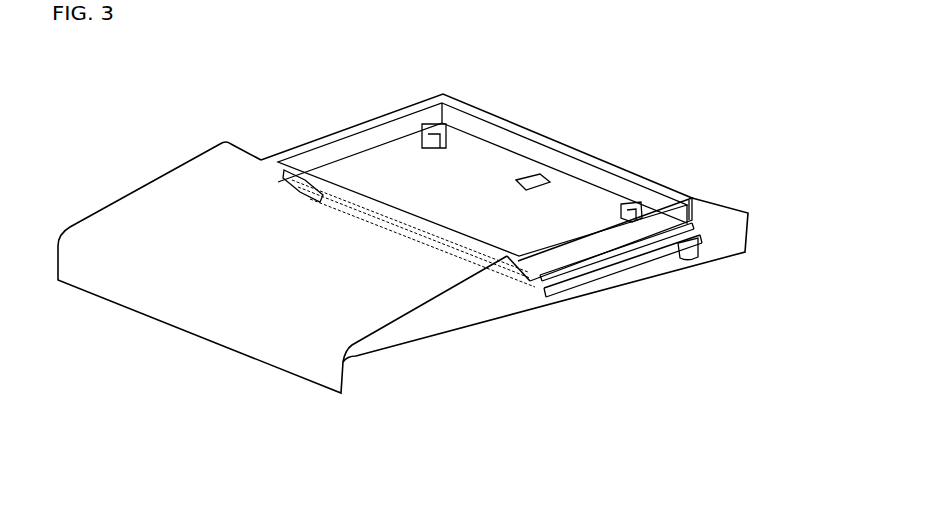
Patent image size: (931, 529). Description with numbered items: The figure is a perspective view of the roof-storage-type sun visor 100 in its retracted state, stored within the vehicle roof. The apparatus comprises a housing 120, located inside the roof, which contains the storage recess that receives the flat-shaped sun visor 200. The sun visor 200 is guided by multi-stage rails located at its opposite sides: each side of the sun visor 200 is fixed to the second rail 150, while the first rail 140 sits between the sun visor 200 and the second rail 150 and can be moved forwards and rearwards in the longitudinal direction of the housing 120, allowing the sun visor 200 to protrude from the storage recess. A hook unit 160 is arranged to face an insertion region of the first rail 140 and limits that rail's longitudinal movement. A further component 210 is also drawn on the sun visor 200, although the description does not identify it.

The roof-storage-type sun visor 100 is at (421, 82).
The housing 120 is at (600, 146).
The first rail 140 is at (644, 249).
The second rail 150 is at (624, 266).
The hook unit 160 is at (631, 207).
The sun visor 200 is at (470, 260).
The support 210 is at (700, 258).